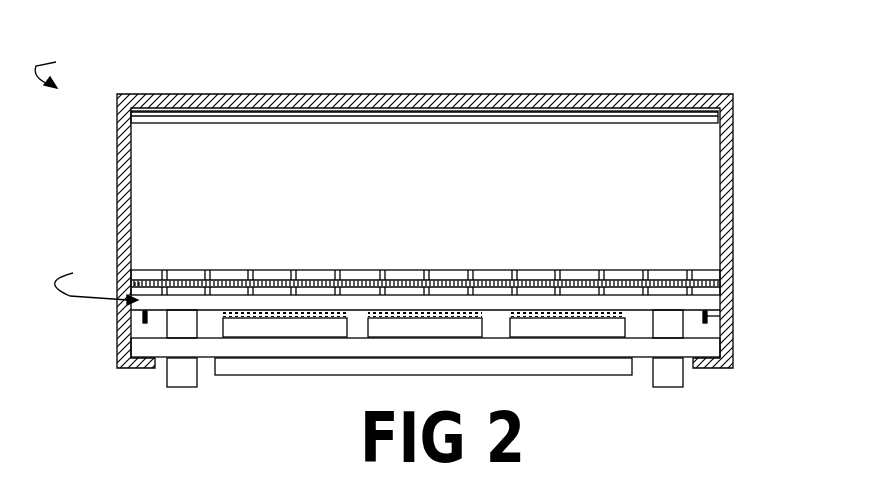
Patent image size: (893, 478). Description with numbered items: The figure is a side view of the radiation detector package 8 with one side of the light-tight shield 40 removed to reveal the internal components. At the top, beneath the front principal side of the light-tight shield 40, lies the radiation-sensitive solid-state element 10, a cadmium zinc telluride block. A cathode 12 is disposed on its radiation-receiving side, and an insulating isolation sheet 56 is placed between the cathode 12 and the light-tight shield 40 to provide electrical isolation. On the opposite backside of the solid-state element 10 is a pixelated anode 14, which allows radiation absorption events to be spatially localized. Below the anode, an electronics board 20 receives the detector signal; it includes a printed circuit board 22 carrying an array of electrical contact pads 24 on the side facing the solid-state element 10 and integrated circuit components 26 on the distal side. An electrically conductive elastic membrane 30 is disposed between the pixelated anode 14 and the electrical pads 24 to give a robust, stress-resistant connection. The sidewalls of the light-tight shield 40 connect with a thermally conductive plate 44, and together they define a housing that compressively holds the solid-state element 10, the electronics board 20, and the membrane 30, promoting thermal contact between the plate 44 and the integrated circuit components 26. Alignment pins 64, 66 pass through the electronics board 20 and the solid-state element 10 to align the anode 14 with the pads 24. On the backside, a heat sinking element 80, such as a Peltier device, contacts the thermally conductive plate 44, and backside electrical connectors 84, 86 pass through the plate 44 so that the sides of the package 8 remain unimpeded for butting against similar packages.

The radiation detector package 8 is at (57, 67).
The radiation-sensitive solid-state element 10 is at (481, 211).
The cathode 12 is at (552, 119).
The pixelated anode 14 is at (568, 272).
The electronics board 20 is at (387, 280).
The printed circuit board 22 is at (683, 303).
The array of electrical contact pads 24 is at (347, 293).
The integrated circuit components 26 is at (460, 328).
The electrically conductive elastic membrane 30 is at (640, 270).
The light-tight shield 40 is at (396, 94).
The thermally conductive plate 44 is at (645, 350).
The insulating isolation sheet 56 is at (600, 113).
The alignment pin 64 is at (140, 317).
The alignment pin 66 is at (707, 319).
The heat sinking element 80 is at (255, 369).
The backside electrical connector 84 is at (180, 380).
The backside electrical connector 86 is at (680, 376).